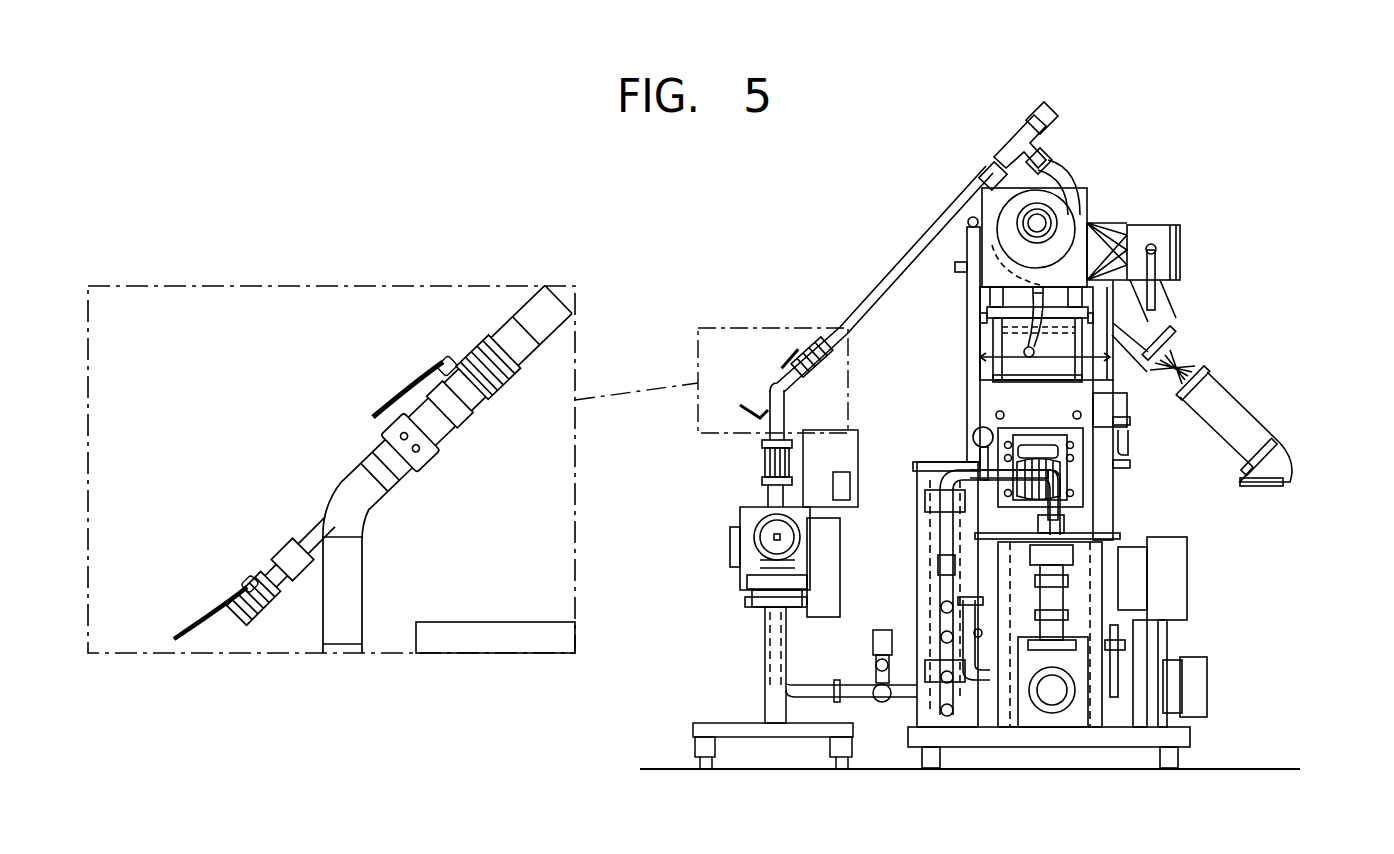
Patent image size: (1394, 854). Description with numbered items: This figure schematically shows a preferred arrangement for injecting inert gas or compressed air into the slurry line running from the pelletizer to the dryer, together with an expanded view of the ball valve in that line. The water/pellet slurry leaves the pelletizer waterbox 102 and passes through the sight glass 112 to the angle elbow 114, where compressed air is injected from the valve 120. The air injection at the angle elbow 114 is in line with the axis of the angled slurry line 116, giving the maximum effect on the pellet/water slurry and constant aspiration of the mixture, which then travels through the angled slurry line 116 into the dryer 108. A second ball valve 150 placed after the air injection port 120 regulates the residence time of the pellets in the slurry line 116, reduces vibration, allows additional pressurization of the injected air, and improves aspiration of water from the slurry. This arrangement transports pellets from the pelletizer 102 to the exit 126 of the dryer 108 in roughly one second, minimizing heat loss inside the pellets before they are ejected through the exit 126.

The pelletizer waterbox 102 is at (750, 507).
The dryer 108 is at (1082, 515).
The sight glass 112 is at (760, 460).
The angle elbow 114 is at (336, 492).
The angled slurry line 116 is at (898, 267).
The valve 120 is at (253, 586).
The exit 126 is at (1300, 470).
The second ball valve 150 is at (452, 357).